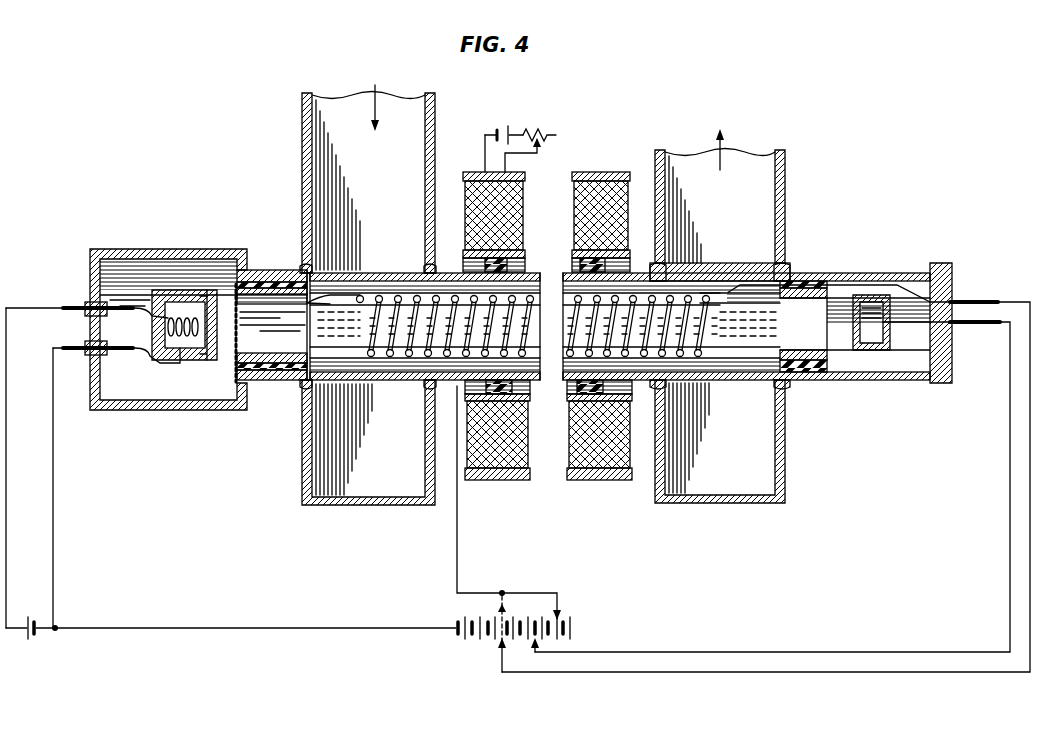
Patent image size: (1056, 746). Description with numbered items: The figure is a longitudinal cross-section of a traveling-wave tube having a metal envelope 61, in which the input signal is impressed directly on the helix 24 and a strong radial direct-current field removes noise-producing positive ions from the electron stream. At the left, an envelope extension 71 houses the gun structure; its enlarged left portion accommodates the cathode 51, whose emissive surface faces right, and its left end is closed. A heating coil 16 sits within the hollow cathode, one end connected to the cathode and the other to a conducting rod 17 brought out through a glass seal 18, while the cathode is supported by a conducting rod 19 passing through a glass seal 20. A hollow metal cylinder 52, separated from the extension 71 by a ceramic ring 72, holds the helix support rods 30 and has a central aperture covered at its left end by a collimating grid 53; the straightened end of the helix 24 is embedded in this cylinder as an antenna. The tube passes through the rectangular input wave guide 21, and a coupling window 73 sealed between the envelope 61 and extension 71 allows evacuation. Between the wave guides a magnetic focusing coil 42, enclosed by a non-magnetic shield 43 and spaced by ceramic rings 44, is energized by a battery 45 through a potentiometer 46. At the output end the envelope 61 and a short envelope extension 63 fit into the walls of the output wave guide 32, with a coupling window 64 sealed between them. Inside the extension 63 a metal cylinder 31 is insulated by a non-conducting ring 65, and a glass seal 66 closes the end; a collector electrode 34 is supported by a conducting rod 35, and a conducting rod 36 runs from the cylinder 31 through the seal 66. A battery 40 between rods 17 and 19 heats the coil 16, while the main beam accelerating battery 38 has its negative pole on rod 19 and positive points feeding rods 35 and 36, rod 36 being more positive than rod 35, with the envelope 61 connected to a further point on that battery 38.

The heating coil 16 is at (165, 325).
The conducting rod 17 is at (70, 304).
The glass seal 18 is at (88, 300).
The conducting rod 19 is at (78, 346).
The glass seal 20 is at (108, 358).
The input wave guide 21 is at (302, 157).
The helix 24 is at (715, 345).
The helix support rods 30 is at (738, 344).
The metal cylinder 31 is at (829, 356).
The output wave guide 32 is at (787, 193).
The collector electrode 34 is at (890, 340).
The conducting rod 35 is at (965, 324).
The conducting rod 36 is at (977, 302).
The main beam accelerating battery 38 is at (478, 640).
The battery 40 is at (32, 617).
The magnetic focusing coil 42 is at (572, 193).
The non-magnetic shield 43 is at (595, 172).
The ceramic rings 44 is at (523, 265).
The battery 45 is at (505, 127).
The potentiometer 46 is at (545, 135).
The cathode 51 is at (170, 290).
The hollow metal cylinder 52 is at (254, 358).
The collimating grid 53 is at (236, 350).
The metal envelope 61 is at (641, 272).
The envelope extension 63 is at (848, 275).
The coupling window 64 is at (722, 270).
The non-conducting ring 65 is at (828, 370).
The glass seal 66 is at (953, 272).
The envelope extension 71 is at (180, 253).
The ceramic ring 72 is at (263, 280).
The coupling window 73 is at (378, 272).